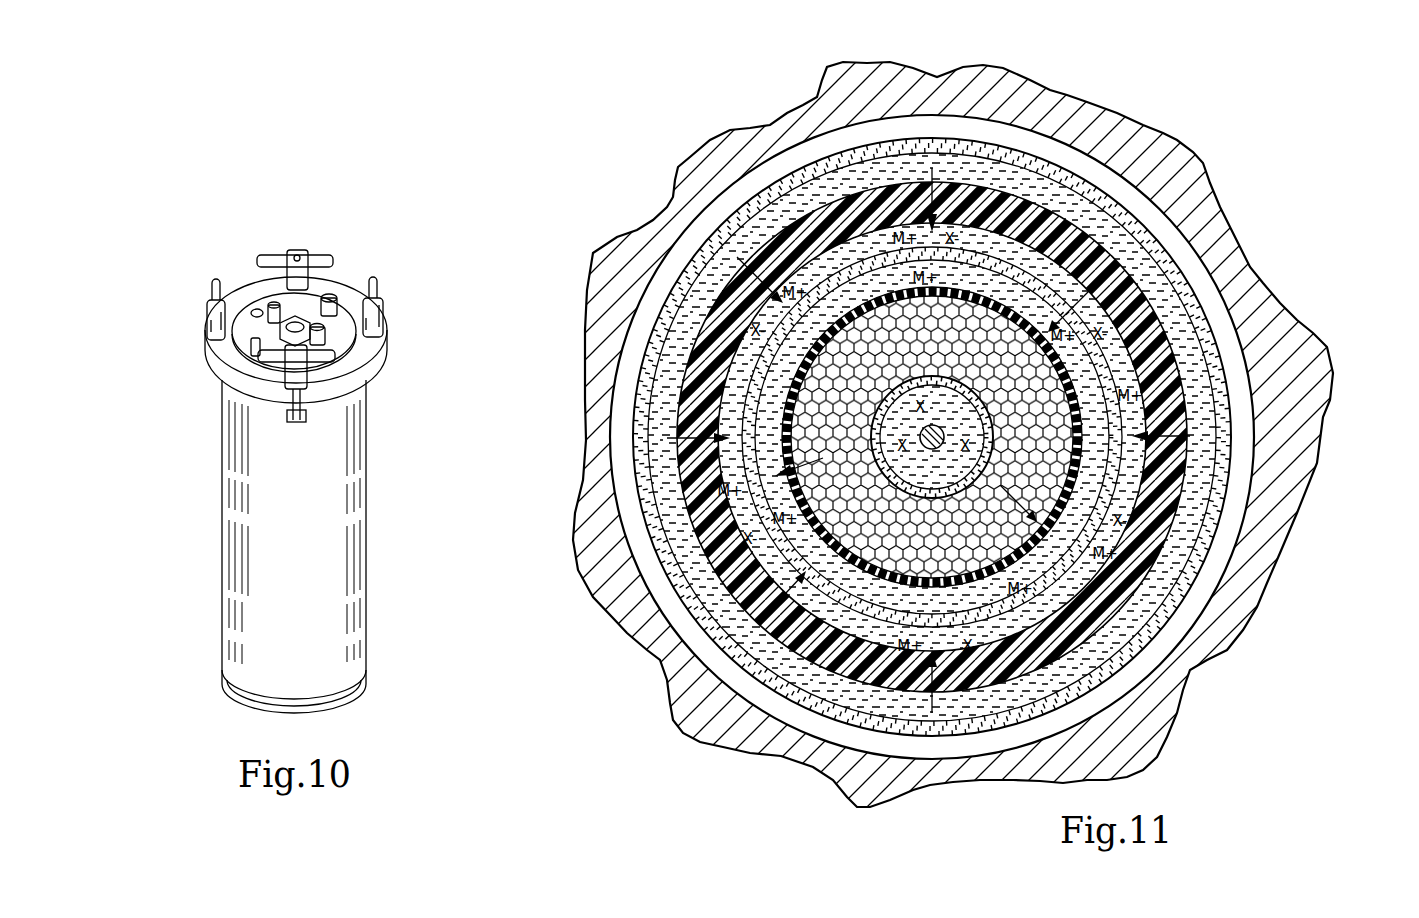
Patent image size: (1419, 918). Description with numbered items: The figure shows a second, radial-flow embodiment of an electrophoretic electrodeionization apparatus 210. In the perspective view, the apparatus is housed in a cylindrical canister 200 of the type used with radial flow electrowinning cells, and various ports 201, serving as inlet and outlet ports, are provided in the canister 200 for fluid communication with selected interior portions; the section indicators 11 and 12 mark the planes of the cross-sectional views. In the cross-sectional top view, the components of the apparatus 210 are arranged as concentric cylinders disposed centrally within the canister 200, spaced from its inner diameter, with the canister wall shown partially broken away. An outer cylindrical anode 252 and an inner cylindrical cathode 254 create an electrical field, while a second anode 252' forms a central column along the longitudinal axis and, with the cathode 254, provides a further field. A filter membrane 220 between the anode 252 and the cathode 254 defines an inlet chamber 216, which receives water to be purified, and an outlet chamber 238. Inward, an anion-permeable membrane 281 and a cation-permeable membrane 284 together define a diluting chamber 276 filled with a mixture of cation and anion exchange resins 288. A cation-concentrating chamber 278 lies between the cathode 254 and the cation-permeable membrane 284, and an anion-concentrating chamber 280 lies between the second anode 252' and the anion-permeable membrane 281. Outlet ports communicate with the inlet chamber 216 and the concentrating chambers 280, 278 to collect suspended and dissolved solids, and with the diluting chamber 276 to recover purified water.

In FIG. 10, the cylindrical canister 200 is at (360, 718).
In FIG. 11, the cylindrical canister 200 is at (1172, 178).
In FIG. 10, the ports 201 is at (348, 283).
In FIG. 11, the electrophoretic electrodeionization apparatus 210 is at (1188, 78).
In FIG. 11, the mixture of cation and anion exchange resins 288 is at (993, 325).
In FIG. 11, the cation-concentrating chamber 278 is at (1087, 400).
In FIG. 11, the outer cylindrical anode 252 is at (896, 464).
In FIG. 11, the second anode 252' is at (963, 347).
In FIG. 11, the anion-permeable membrane 281 is at (970, 384).
In FIG. 11, the diluting chamber 276 is at (856, 433).
In FIG. 11, the anion-concentrating chamber 280 is at (913, 497).
In FIG. 11, the cation-permeable membrane 284 is at (1063, 480).
In FIG. 11, the filter membrane 220 is at (1095, 518).
In FIG. 11, the outlet chamber 238 is at (1053, 590).
In FIG. 11, the inlet chamber 216 is at (1030, 677).
In FIG. 11, the inner cylindrical cathode 254 is at (713, 627).
In FIG. 10, the section line 11 is at (375, 487).
In FIG. 11, the section line 12 is at (565, 430).